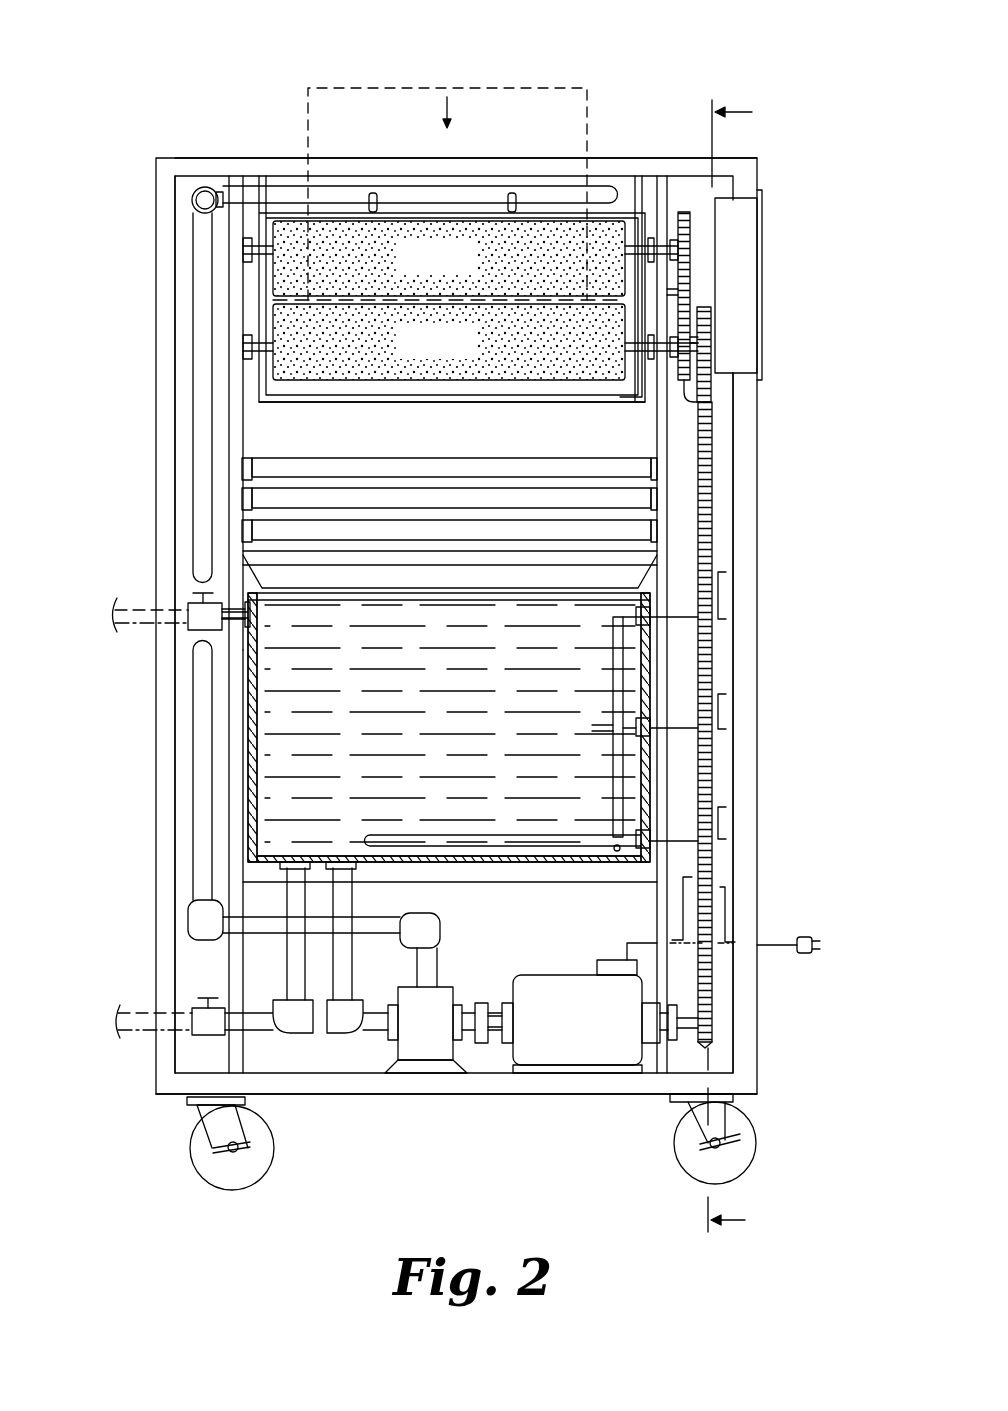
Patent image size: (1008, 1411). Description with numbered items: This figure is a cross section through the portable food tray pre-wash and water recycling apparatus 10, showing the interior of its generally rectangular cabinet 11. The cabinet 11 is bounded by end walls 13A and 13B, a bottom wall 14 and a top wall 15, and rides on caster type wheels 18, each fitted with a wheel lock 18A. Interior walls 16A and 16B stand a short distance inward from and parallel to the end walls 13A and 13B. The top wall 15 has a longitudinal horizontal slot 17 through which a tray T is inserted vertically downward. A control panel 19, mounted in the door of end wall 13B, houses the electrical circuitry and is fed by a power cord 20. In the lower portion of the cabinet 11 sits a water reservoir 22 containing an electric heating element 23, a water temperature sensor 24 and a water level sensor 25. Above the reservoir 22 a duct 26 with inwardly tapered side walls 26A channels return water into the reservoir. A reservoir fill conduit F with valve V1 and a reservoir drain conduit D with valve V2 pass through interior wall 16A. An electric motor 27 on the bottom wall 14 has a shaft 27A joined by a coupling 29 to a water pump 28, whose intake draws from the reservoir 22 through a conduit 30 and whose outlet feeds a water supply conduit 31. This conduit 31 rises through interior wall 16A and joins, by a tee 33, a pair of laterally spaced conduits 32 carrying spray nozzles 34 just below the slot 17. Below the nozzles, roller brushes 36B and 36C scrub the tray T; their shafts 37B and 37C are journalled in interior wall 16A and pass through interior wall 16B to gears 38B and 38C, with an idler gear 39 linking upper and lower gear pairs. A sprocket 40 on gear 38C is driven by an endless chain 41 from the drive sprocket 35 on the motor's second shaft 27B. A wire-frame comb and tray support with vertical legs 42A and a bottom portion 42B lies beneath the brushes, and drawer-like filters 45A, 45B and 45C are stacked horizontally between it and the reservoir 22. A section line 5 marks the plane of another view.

The portable food tray pre-wash and water recycling apparatus 10 is at (130, 109).
The cabinet 11 is at (154, 278).
The end wall 13A is at (155, 412).
The end wall 13B is at (757, 622).
The bottom wall 14 is at (436, 1097).
The top wall 15 is at (250, 160).
The interior wall 16A is at (228, 432).
The interior wall 16B is at (665, 500).
The slot 17 is at (595, 160).
The caster type wheels 18 is at (195, 1158).
The wheel lock 18A is at (262, 1148).
The control panel 19 is at (745, 215).
The power cord 20 is at (778, 945).
The water reservoir 22 is at (243, 690).
The electric heating element 23 is at (450, 835).
The water temperature sensor 24 is at (592, 728).
The water level sensor 25 is at (612, 652).
The duct 26 is at (262, 580).
The inwardly tapered side walls 26A is at (450, 570).
The electric motor 27 is at (580, 1029).
The shaft 27A is at (497, 1043).
The second shaft 27B is at (690, 1040).
The water pump 28 is at (440, 1044).
The coupling 29 is at (495, 1003).
The conduit 30 is at (346, 972).
The water supply conduit 31 is at (193, 770).
The laterally spaced conduits 32 is at (332, 192).
The tee 33 is at (192, 200).
The spray nozzles 34 is at (512, 195).
The drive sprocket 35 is at (712, 1030).
The roller brush 36B is at (472, 273).
The roller brush 36C is at (472, 357).
The shaft 37B is at (243, 248).
The shaft 37C is at (243, 338).
The gear 38B is at (690, 243).
The gear 38C is at (711, 397).
The idler gear 39 is at (678, 292).
The sprocket 40 is at (698, 340).
The endless chain 41 is at (712, 526).
The vertical legs 42A is at (259, 365).
The bottom portion 42B is at (545, 402).
The filter 45A is at (268, 458).
The filter 45B is at (312, 495).
The filter 45C is at (383, 520).
The valve V1 is at (192, 612).
The valve V2 is at (205, 1035).
The reservoir fill conduit F is at (243, 620).
The reservoir drain conduit D is at (292, 960).
The tray T is at (548, 80).
The section line 5 is at (744, 669).